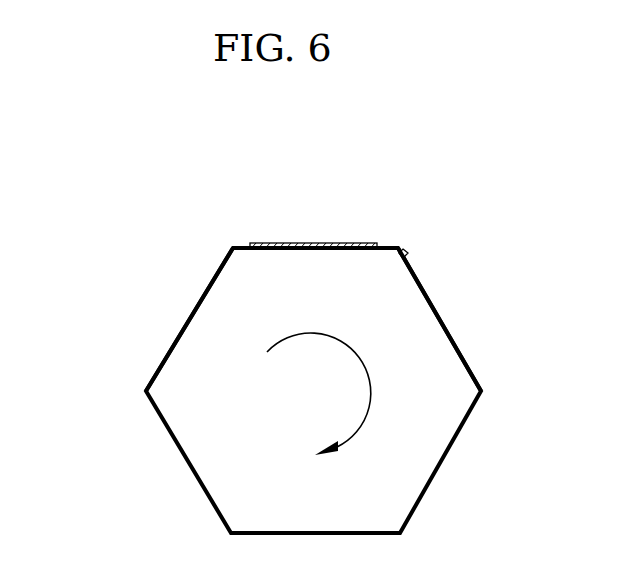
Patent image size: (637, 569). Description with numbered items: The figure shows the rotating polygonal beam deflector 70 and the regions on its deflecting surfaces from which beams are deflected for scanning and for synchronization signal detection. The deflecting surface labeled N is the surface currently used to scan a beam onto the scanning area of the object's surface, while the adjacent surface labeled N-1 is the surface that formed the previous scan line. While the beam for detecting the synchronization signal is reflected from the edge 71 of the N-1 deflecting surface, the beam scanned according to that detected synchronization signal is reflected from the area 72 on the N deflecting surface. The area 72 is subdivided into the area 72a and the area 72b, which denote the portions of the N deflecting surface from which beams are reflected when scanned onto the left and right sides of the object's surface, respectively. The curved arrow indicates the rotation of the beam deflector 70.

The beam deflector 70 is at (413, 452).
The edge 71 is at (408, 253).
The area 72 is at (397, 178).
The area 72a is at (370, 243).
The area 72b is at (266, 243).
The N-th deflecting surface N is at (232, 248).
The (N-1)th deflecting surface N-1 is at (442, 320).